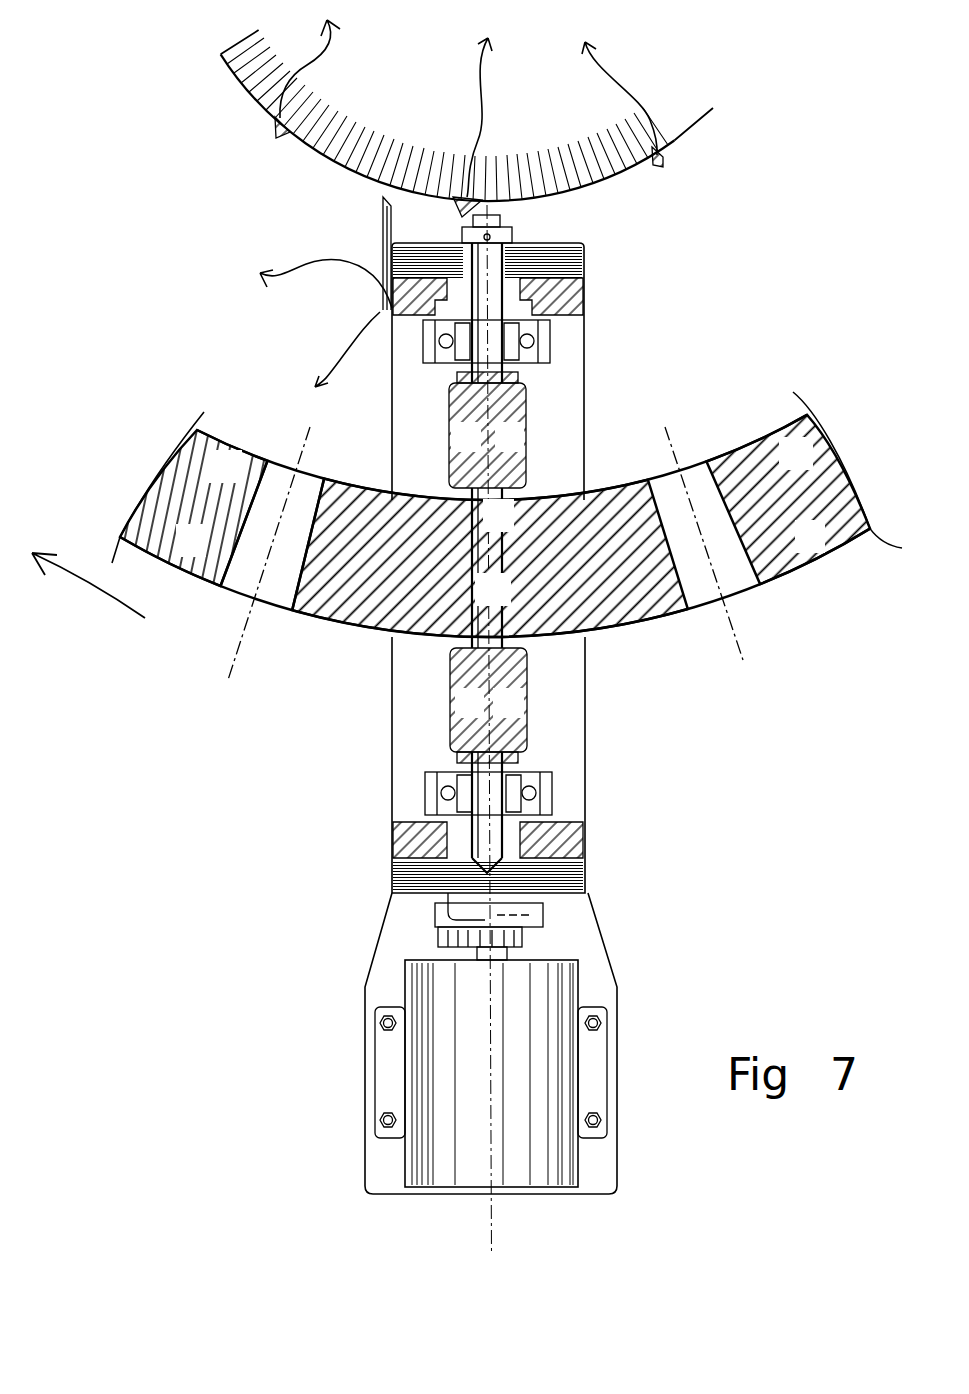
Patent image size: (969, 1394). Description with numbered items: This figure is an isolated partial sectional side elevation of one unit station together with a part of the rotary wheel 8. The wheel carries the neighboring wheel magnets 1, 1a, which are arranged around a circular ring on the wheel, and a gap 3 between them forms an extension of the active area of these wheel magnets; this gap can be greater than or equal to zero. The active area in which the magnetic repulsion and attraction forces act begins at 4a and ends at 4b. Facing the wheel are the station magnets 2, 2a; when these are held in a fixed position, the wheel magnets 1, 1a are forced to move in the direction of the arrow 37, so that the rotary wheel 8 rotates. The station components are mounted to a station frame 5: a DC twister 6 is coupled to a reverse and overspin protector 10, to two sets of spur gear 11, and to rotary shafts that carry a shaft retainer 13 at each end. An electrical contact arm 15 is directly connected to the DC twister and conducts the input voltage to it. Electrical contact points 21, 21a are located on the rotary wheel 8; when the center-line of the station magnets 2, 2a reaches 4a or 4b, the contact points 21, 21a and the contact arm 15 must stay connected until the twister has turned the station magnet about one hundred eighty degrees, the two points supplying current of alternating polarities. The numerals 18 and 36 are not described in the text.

The wheel magnet 1 is at (342, 608).
The wheel magnet 1a is at (213, 443).
The station magnet 2 is at (460, 727).
The station magnet 2a is at (517, 412).
The gap 3 is at (247, 577).
The beginning of active area 4a is at (227, 677).
The end of active area 4b is at (745, 660).
The station frame 5 is at (575, 272).
The twister 6 is at (440, 1153).
The rotary wheel 8 is at (260, 60).
The reverse and overspin protector 10 is at (440, 942).
The spur gear 11 is at (550, 340).
The shaft retainer 13 is at (507, 232).
The electrical contact arm 15 is at (382, 222).
The lower housing block 18 is at (398, 836).
The electrical contact point 21 is at (275, 133).
The electrical contact point 21a is at (457, 197).
The direction of movement 36 is at (333, 35).
The arrow 37 is at (85, 590).